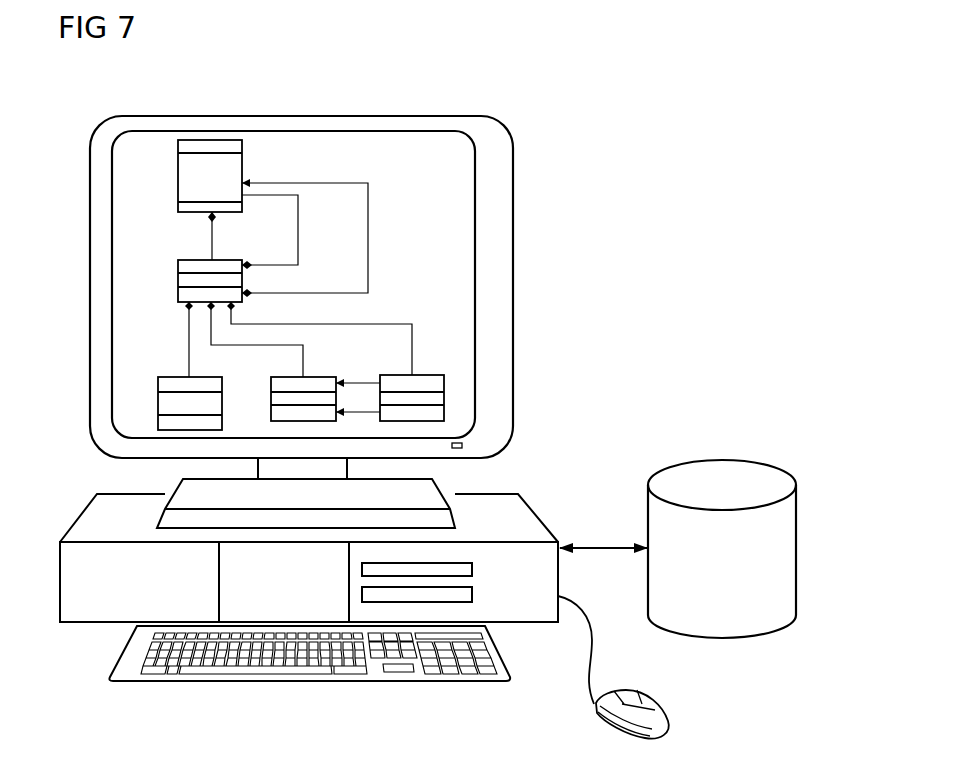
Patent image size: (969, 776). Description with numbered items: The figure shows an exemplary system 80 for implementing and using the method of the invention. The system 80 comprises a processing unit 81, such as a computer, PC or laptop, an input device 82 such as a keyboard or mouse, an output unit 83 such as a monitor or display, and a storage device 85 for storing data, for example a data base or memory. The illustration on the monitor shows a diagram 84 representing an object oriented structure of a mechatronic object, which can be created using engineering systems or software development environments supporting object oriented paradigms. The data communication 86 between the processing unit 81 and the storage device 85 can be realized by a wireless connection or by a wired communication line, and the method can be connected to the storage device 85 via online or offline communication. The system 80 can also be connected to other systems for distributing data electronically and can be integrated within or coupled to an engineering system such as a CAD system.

The system 80 is at (643, 92).
The processing unit 81 is at (518, 493).
The input device 82 is at (477, 682).
The output unit 83 is at (285, 116).
The diagram 84 is at (400, 158).
The storage device 85 is at (722, 472).
The data communication 86 is at (600, 546).